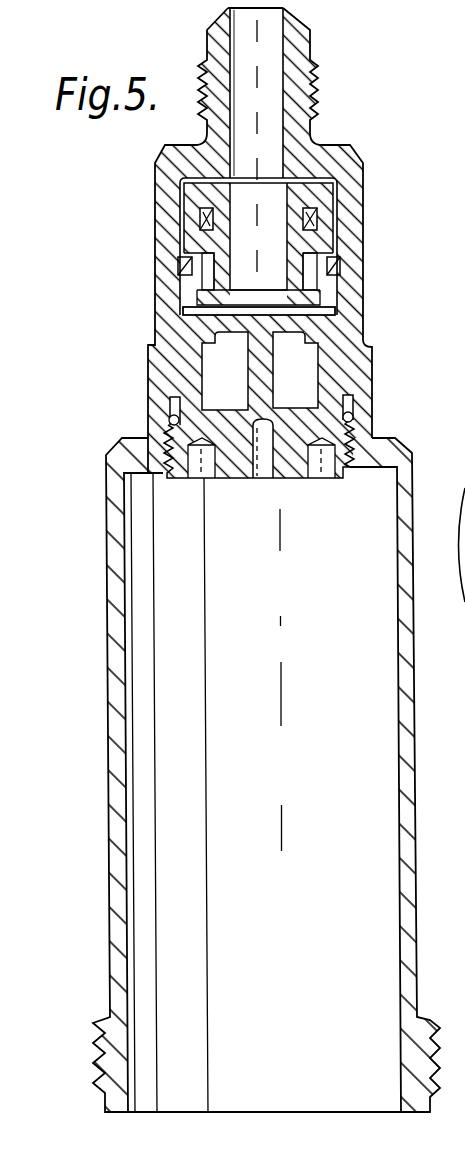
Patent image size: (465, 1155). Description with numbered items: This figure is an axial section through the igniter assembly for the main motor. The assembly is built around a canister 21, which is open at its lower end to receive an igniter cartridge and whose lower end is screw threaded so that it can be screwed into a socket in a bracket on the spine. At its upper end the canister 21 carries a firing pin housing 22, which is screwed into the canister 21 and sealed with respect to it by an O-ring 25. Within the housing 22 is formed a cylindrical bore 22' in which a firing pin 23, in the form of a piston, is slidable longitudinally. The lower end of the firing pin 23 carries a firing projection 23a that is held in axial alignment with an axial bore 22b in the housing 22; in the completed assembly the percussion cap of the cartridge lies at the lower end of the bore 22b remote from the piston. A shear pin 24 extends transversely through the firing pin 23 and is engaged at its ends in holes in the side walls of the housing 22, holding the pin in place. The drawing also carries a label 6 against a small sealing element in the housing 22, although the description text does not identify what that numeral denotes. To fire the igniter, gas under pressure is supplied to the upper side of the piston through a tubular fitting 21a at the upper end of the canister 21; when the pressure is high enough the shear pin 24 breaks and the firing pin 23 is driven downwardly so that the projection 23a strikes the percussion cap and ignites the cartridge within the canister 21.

The canister 21 is at (78, 532).
The tubular fitting 21a is at (420, 47).
The firing pin housing 22 is at (219, 243).
The cylindrical bore 22' is at (123, 412).
The axial bore 22b is at (463, 373).
The firing pin 23 is at (330, 190).
The firing projection 23a is at (458, 314).
The shear pin 24 is at (178, 370).
The O-ring 25 is at (332, 266).
The O-ring seal 6 is at (315, 222).